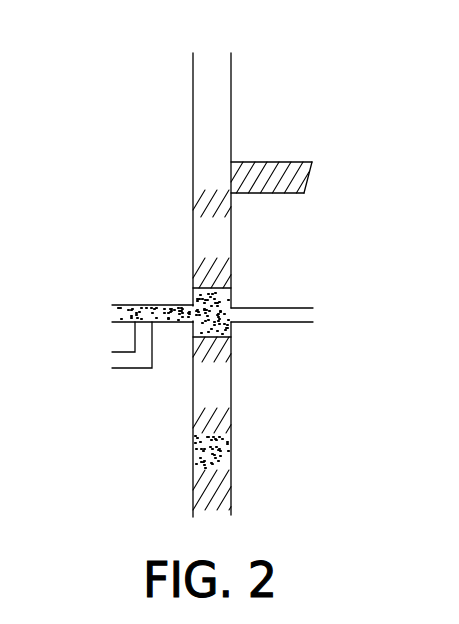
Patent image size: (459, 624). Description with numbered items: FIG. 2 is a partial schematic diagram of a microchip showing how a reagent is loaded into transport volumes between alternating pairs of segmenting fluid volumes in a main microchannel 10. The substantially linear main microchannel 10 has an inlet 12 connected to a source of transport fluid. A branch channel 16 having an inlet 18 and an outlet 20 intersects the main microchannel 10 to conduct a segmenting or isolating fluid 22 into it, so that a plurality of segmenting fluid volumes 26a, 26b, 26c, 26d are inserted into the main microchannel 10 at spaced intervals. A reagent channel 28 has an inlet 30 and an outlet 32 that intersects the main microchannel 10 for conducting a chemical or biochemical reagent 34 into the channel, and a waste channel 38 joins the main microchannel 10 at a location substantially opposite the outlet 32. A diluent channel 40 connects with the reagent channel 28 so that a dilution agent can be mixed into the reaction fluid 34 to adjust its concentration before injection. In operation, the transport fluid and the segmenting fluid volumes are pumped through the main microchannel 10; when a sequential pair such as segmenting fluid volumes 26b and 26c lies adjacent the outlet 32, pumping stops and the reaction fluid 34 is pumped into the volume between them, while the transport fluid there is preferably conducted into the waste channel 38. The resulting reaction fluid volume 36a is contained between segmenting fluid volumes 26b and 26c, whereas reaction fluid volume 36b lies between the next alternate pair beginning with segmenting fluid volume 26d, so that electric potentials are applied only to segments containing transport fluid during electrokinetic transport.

The main microchannel 10 is at (193, 241).
The inlet 12 is at (193, 55).
The branch channel 16 is at (256, 162).
The inlet 18 is at (305, 190).
The outlet 20 is at (245, 194).
The segmenting fluid 22 is at (302, 166).
The segmenting fluid volume 26a is at (199, 203).
The segmenting fluid volume 26b is at (222, 273).
The segmenting fluid volume 26c is at (213, 349).
The segmenting fluid volume 26d is at (205, 420).
The reagent channel 28 is at (165, 305).
The inlet 30 is at (112, 322).
The outlet 32 is at (193, 316).
The reagent 34 is at (122, 305).
The reaction fluid volume 36a is at (222, 302).
The reaction fluid volume 36b is at (230, 460).
The waste channel 38 is at (283, 322).
The diluent channel 40 is at (130, 370).